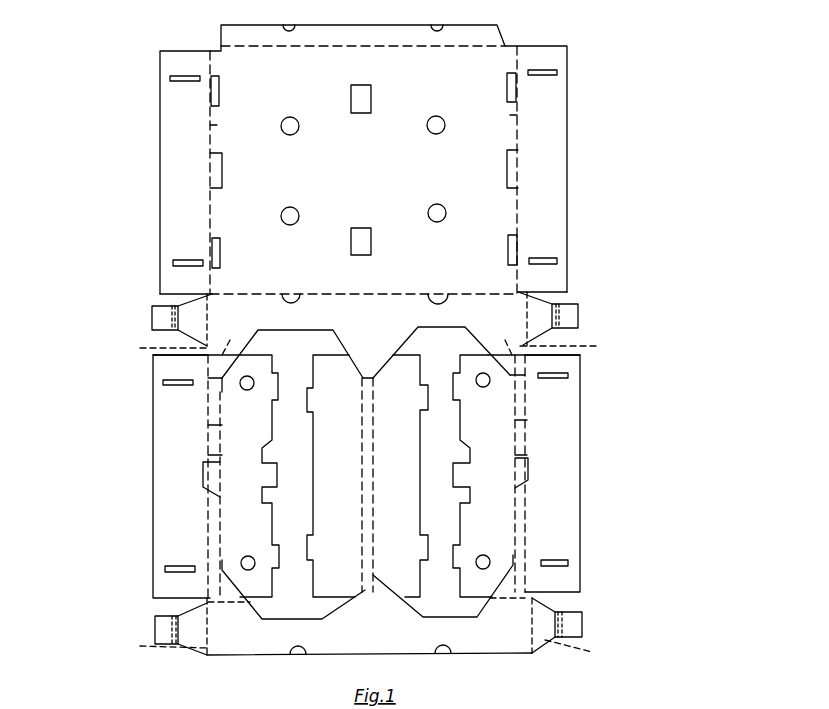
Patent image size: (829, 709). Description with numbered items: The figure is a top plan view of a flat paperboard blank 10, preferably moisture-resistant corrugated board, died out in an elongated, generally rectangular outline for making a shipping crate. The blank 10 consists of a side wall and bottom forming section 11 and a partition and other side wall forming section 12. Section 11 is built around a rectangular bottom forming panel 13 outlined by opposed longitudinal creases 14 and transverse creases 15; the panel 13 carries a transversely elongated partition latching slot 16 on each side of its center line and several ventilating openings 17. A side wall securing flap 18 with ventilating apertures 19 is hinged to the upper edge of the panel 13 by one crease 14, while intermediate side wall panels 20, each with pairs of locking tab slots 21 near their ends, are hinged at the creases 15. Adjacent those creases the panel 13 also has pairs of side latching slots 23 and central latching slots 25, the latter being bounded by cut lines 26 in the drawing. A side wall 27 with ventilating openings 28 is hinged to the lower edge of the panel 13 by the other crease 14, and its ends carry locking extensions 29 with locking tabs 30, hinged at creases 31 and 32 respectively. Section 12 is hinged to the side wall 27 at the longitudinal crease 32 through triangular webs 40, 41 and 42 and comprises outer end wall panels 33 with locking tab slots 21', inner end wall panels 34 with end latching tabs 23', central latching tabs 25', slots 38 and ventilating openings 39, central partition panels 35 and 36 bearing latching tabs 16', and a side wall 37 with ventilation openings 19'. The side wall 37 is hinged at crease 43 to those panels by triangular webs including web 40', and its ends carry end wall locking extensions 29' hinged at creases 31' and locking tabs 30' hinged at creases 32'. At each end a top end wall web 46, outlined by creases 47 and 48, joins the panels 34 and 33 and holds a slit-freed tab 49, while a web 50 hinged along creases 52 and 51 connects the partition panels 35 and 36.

The paperboard blank 10 is at (122, 582).
The one side wall and bottom forming section 11 is at (160, 190).
The partition and other side wall forming section 12 is at (152, 438).
The bottom forming panel 13 is at (365, 170).
The longitudinal creases 14 is at (351, 44).
The transverse creases 15 is at (218, 125).
The partition latching slot 16 is at (368, 170).
The ventilating openings 17 is at (297, 211).
The side wall securing flap 18 is at (395, 30).
The ventilating apertures 19 is at (359, 20).
The intermediate side wall panels 20 is at (363, 224).
The locking tab slots 21 is at (365, 158).
The side latching slots 23 is at (364, 164).
The central latching slots 25 is at (364, 165).
The cut line 26 is at (222, 153).
The side wall 27 is at (366, 345).
The ventilating openings 28 is at (296, 302).
The locking extensions 29 is at (354, 292).
The locking tab 30 is at (364, 315).
The creases 31 is at (365, 351).
The crease 32 is at (367, 323).
The outer end wall panels 33 is at (366, 476).
The inner end wall panels 34 is at (367, 476).
The central partition forming panel 35 is at (331, 476).
The central partition forming panel 36 is at (405, 476).
The side wall 37 is at (369, 643).
The slots 38 is at (262, 490).
The ventilating openings 39 is at (242, 389).
The triangular web 40 is at (196, 370).
The triangular web 41 is at (371, 472).
The triangular web 42 is at (534, 468).
The crease 43 is at (242, 600).
The top end wall web 46 is at (208, 426).
The crease 47 is at (222, 442).
The crease 48 is at (208, 453).
The slit-freed tab 49 is at (203, 475).
The web 50 is at (373, 413).
The crease 51 is at (373, 458).
The crease 52 is at (362, 458).
The latching tabs 16' is at (367, 472).
The ventilation openings 19' is at (377, 658).
The locking tab slots 21' is at (363, 460).
The latching tabs 23' is at (365, 470).
The latching tabs 25' is at (365, 457).
The end wall locking extensions 29' is at (371, 602).
The locking tabs 30' is at (368, 628).
The creases 31' is at (366, 660).
The creases 32' is at (377, 631).
The triangular web 40' is at (222, 583).